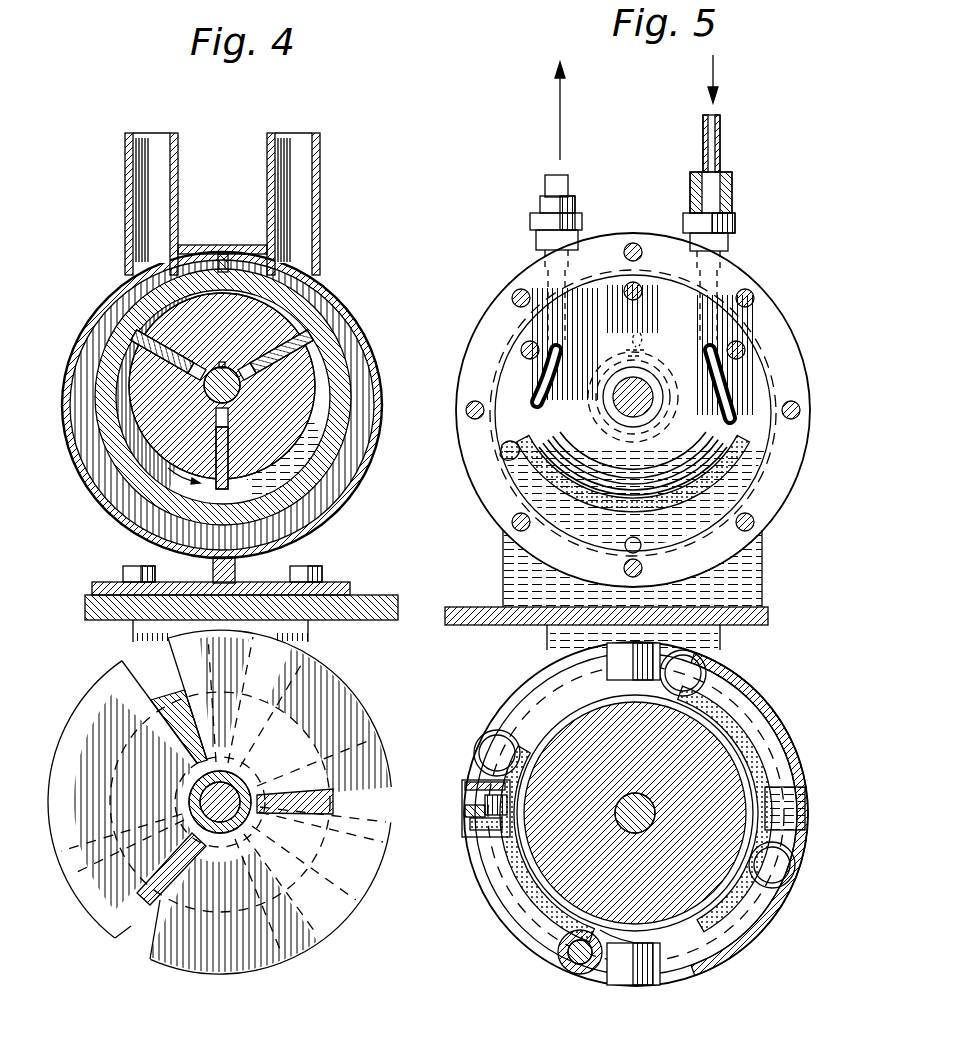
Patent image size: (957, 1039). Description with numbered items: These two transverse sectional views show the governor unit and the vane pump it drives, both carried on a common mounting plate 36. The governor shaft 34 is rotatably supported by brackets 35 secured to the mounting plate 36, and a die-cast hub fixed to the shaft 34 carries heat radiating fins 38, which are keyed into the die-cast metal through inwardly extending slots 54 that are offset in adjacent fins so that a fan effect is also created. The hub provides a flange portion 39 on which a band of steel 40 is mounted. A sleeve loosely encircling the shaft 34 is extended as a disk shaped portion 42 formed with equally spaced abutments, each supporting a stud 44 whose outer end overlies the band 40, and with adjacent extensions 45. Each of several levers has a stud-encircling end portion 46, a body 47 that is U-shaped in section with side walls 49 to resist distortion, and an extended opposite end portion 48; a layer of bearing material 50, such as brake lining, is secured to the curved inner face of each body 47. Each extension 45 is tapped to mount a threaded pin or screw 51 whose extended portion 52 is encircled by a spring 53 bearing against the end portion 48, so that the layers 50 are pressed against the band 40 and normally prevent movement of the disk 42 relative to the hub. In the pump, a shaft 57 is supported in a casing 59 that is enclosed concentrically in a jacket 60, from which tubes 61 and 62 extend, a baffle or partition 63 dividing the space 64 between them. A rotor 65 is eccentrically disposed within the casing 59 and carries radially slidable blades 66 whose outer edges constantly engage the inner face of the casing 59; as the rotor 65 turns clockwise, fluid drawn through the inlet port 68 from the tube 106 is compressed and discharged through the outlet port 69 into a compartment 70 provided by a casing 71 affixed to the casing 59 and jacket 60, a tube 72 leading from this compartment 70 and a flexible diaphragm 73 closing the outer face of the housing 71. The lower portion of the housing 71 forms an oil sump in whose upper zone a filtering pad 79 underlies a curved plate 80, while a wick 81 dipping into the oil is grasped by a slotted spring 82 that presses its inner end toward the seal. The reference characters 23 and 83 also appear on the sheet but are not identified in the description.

In FIG. 4, the pump housing 23 is at (101, 515).
In FIG. 5, the pump housing 23 is at (769, 554).
In FIG. 4, the shaft 34 is at (220, 857).
In FIG. 5, the shaft 34 is at (560, 910).
In FIG. 4, the brackets 35 is at (298, 637).
In FIG. 5, the brackets 35 is at (722, 644).
In FIG. 4, the mounting plate 36 is at (375, 607).
In FIG. 5, the mounting plate 36 is at (770, 624).
In FIG. 4, the heat radiating fins 38 is at (338, 700).
In FIG. 5, the flange portion 39 is at (573, 924).
In FIG. 5, the band of steel 40 is at (731, 947).
In FIG. 5, the disk shaped portion 42 is at (789, 868).
In FIG. 5, the stud 44 is at (493, 748).
In FIG. 5, the extensions 45 is at (610, 659).
In FIG. 5, the stud-encircling end portion 46 is at (704, 673).
In FIG. 5, the body 47 is at (744, 714).
In FIG. 5, the extended opposite end portion 48 is at (771, 787).
In FIG. 5, the side walls 49 is at (732, 696).
In FIG. 5, the layer of bearing material 50 is at (743, 740).
In FIG. 5, the threaded pin or screw 51 is at (465, 796).
In FIG. 5, the extended portion 52 is at (478, 815).
In FIG. 5, the spring 53 is at (490, 830).
In FIG. 4, the inwardly extending slots 54 is at (135, 927).
In FIG. 4, the shaft 57 is at (203, 400).
In FIG. 5, the shaft 57 is at (620, 411).
In FIG. 4, the casing 59 is at (302, 318).
In FIG. 4, the jacket 60 is at (358, 320).
In FIG. 4, the tube 61 is at (179, 143).
In FIG. 4, the tube 62 is at (321, 150).
In FIG. 4, the baffle or partition 63 is at (229, 253).
In FIG. 4, the space 64 is at (361, 378).
In FIG. 4, the rotor 65 is at (305, 405).
In FIG. 4, the blade 66 is at (140, 343).
In FIG. 5, the inlet port 68 is at (724, 379).
In FIG. 5, the outlet port 69 is at (537, 374).
In FIG. 5, the compartment 70 is at (760, 483).
In FIG. 5, the casing 71 is at (719, 301).
In FIG. 5, the tube 72 is at (544, 200).
In FIG. 5, the flexible diaphragm 73 is at (727, 409).
In FIG. 5, the filtering pad 79 is at (506, 452).
In FIG. 5, the curved plate 80 is at (548, 470).
In FIG. 5, the wick 81 is at (641, 332).
In FIG. 5, the slotted spring 82 is at (601, 404).
In FIG. 4, the cylinder wall 83 is at (136, 308).
In FIG. 5, the tube 106 is at (722, 131).